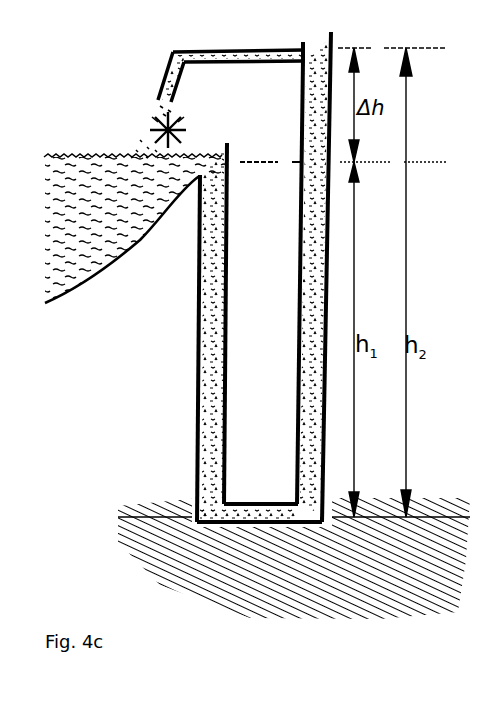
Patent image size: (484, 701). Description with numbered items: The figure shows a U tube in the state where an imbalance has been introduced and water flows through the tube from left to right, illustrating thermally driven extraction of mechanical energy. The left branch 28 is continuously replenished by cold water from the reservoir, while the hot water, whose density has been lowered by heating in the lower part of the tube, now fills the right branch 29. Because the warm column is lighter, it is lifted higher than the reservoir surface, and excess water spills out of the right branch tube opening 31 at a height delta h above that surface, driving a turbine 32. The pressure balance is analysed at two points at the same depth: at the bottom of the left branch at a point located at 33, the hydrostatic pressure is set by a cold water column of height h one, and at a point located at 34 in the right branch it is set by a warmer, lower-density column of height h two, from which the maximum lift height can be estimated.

The left branch 28 is at (238, 335).
The right branch 29 is at (290, 277).
The right branch tube opening 31 is at (230, 89).
The turbine 32 is at (148, 130).
The point at bottom of left branch 33 is at (236, 538).
The point in right branch 34 is at (345, 546).